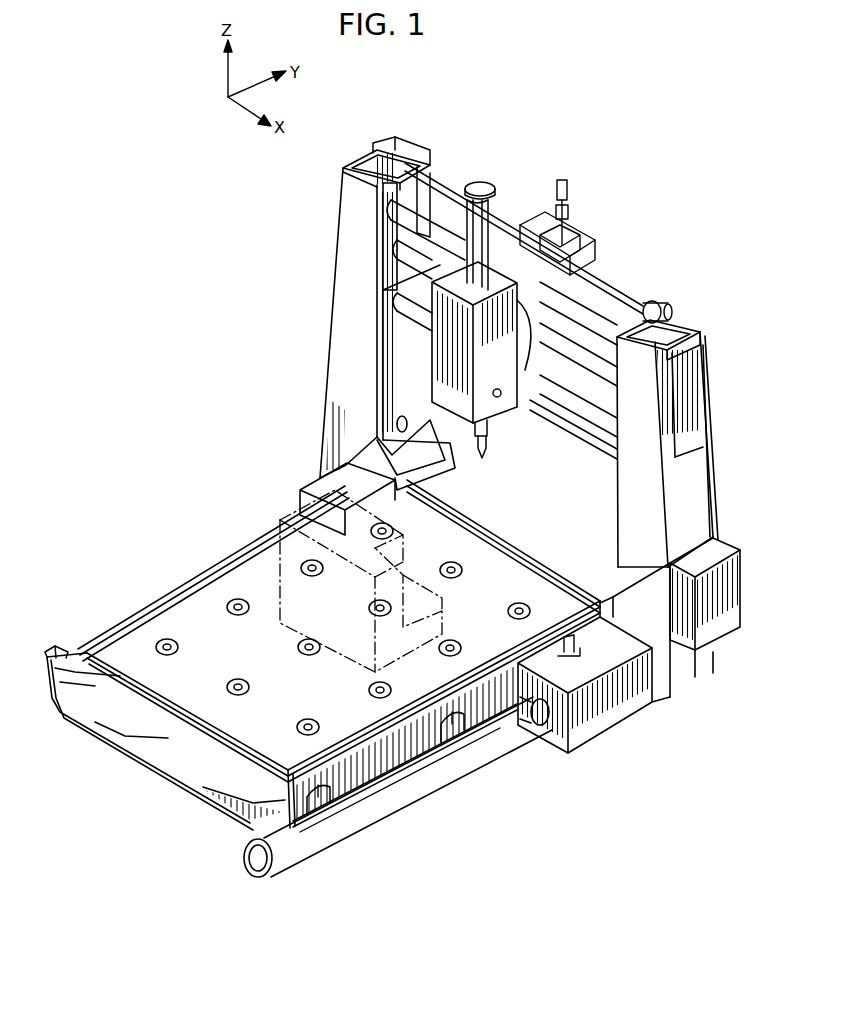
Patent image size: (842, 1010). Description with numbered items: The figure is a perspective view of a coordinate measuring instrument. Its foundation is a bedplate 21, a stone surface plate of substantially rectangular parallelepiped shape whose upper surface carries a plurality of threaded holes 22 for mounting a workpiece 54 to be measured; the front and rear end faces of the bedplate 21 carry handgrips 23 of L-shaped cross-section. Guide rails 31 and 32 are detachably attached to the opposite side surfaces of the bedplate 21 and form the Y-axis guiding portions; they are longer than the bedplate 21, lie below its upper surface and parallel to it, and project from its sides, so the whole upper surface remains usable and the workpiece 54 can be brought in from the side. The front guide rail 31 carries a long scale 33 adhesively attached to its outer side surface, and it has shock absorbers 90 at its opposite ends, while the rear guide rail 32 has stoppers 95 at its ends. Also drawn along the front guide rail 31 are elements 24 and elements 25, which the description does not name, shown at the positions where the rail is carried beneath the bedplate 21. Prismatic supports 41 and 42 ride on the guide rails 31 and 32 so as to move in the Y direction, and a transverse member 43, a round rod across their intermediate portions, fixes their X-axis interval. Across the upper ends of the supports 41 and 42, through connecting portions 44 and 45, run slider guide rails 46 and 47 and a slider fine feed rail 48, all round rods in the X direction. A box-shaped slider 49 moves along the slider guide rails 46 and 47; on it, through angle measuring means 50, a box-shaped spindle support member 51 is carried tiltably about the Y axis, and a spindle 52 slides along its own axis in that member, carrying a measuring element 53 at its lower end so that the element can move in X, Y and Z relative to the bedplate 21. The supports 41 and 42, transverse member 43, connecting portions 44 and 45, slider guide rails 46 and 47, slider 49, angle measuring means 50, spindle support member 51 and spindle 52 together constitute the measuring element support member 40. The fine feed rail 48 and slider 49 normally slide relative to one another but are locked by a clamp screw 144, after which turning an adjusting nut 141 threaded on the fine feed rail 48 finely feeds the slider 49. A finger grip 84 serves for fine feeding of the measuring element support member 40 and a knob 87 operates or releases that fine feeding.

The bedplate 21 is at (258, 578).
The threaded holes 22 is at (510, 604).
The handgrips 23 is at (150, 745).
The bearing blocks 24 is at (472, 728).
The fastening bolts 25 is at (450, 735).
The guide rail 31 is at (395, 808).
The guide rail 32 is at (212, 575).
The long scale 33 is at (415, 795).
The measuring element support member 40 is at (340, 226).
The support 41 is at (696, 499).
The support 42 is at (346, 268).
The transverse member 43 is at (606, 430).
The connecting portion 44 is at (700, 323).
The connecting portion 45 is at (372, 167).
The slider guide rail 46 is at (595, 322).
The slider guide rail 47 is at (582, 390).
The slider fine feed rail 48 is at (448, 185).
The slider 49 is at (592, 252).
The angle measuring means 50 is at (512, 390).
The spindle support member 51 is at (435, 355).
The spindle 52 is at (490, 205).
The measuring element 53 is at (488, 440).
The workpiece 54 is at (290, 512).
The finger grip 84 is at (556, 712).
The knob 87 is at (566, 640).
The shock absorbers 90 is at (290, 865).
The stoppers 95 is at (92, 650).
The adjusting nut 141 is at (662, 300).
The clamp screw 144 is at (568, 225).